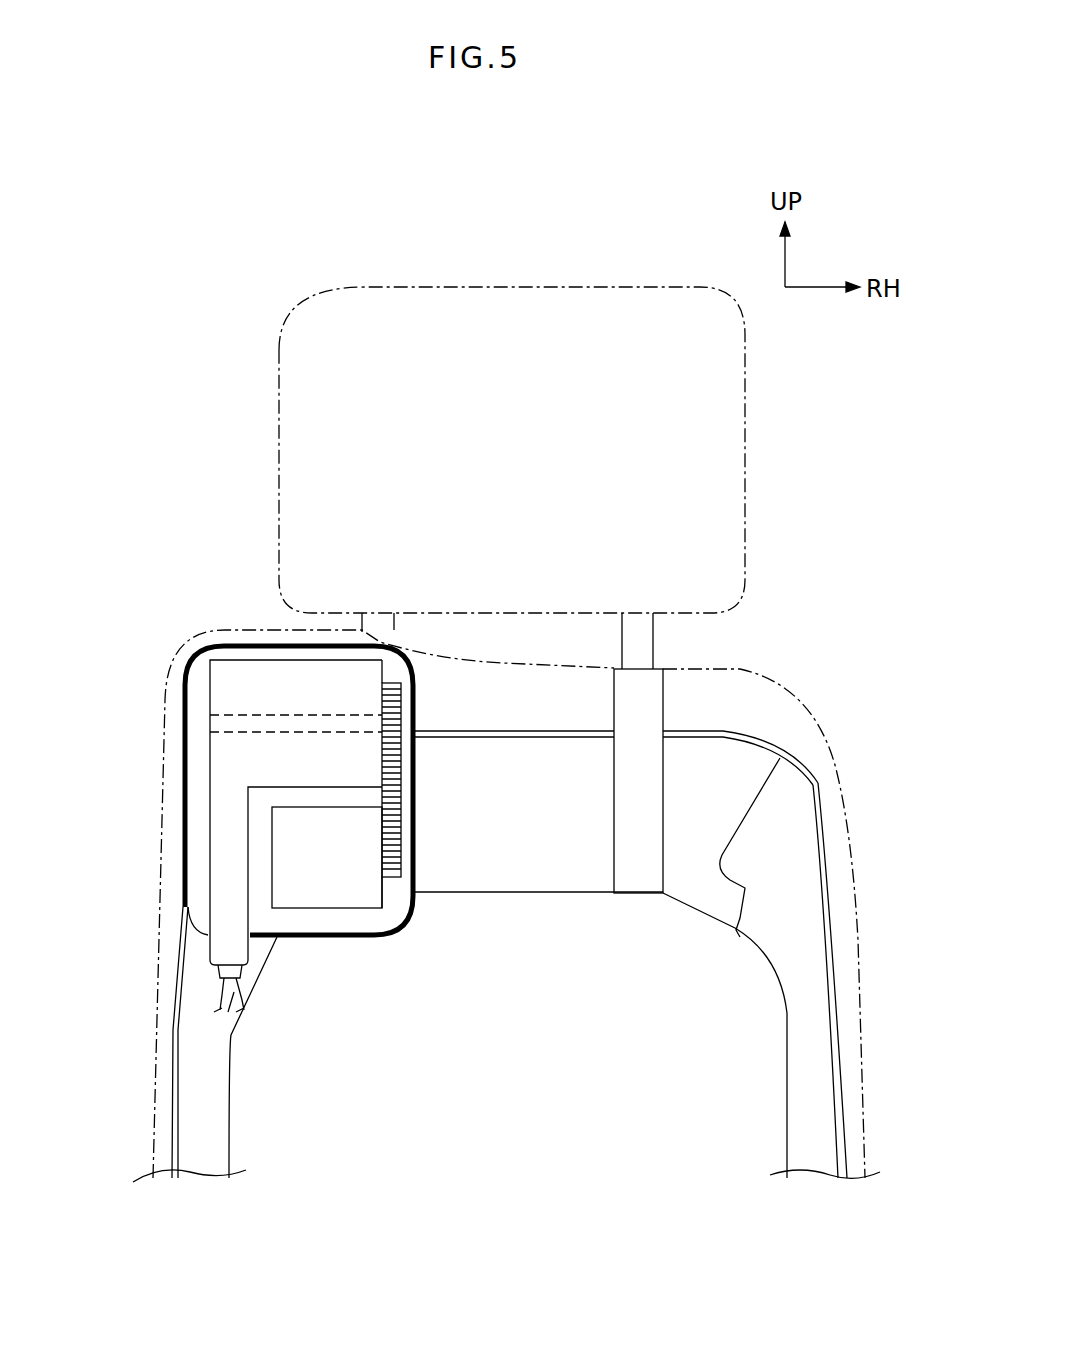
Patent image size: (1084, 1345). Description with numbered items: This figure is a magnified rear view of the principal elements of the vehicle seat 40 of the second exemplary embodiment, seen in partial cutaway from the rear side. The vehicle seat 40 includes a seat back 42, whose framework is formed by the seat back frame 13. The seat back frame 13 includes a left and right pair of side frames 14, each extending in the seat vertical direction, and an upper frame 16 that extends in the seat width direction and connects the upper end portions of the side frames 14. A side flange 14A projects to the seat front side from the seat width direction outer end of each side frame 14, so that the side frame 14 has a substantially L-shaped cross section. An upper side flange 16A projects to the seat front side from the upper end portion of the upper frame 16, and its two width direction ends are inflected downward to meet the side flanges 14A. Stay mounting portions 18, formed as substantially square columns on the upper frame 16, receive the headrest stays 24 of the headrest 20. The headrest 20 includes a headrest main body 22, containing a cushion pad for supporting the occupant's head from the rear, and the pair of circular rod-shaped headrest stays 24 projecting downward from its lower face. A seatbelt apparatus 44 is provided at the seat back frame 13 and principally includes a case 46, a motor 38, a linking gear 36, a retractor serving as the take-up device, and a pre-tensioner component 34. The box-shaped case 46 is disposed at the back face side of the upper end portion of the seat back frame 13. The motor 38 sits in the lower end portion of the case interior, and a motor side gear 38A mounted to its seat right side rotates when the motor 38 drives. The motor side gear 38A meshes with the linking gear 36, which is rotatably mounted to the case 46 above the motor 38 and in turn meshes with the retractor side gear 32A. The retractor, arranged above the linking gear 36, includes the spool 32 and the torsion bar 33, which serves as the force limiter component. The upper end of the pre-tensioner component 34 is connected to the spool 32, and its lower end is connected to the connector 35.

The seat back frame 13 is at (531, 970).
The side frame 14 is at (231, 1117).
The side flange 14A is at (172, 1080).
The upper frame 16 is at (616, 834).
The upper side flange 16A is at (555, 730).
The stay mounting portion 18 is at (665, 708).
The headrest 20 is at (446, 432).
The headrest main body 22 is at (278, 455).
The headrest stay 24 is at (395, 628).
The spool 32 is at (286, 762).
The retractor side gear 32A is at (412, 702).
The torsion bar 33 is at (265, 715).
The pre-tensioner component 34 is at (208, 860).
The connector 35 is at (218, 979).
The linking gear 36 is at (402, 805).
The motor 38 is at (361, 910).
The motor side gear 38A is at (392, 882).
The vehicle seat 40 is at (501, 827).
The seat back 42 is at (501, 841).
The seatbelt apparatus 44 is at (501, 841).
The case 46 is at (297, 790).